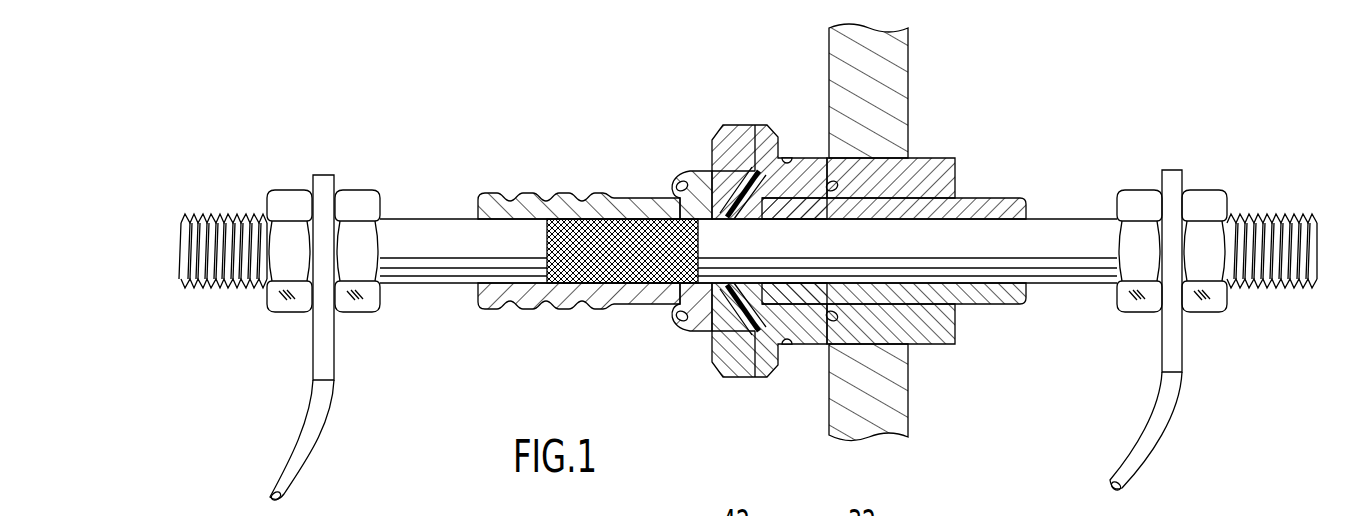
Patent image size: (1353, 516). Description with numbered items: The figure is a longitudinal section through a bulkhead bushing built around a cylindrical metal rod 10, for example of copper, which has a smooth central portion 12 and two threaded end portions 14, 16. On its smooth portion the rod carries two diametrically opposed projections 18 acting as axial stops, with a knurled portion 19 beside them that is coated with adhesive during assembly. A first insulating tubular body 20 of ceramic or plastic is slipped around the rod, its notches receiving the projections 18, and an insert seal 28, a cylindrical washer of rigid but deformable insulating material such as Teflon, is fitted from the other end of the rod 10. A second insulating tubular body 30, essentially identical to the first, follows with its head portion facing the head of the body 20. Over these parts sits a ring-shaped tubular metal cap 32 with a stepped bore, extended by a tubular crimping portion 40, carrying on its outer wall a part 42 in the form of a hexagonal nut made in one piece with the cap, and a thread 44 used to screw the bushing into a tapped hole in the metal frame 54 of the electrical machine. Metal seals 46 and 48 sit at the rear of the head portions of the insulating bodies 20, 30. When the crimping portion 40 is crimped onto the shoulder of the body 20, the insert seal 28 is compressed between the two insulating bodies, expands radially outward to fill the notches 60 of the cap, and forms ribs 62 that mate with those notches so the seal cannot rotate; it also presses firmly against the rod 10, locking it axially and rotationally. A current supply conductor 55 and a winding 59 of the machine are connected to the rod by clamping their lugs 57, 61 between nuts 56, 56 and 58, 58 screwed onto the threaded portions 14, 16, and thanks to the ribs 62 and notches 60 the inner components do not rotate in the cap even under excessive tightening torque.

The cylindrical rod 10 is at (427, 203).
The central portion 12 is at (452, 250).
The threaded end portion 14 is at (225, 262).
The threaded end portion 16 is at (1283, 253).
The projections 18 is at (702, 315).
The knurled portion 19 is at (590, 258).
The first insulating tubular body 20 is at (543, 200).
The insert seal 28 is at (754, 135).
The second insulating tubular body 30 is at (993, 207).
The tubular metal cap 32 is at (708, 144).
The crimping portion 40 is at (672, 312).
The hexagonal nut part 42 is at (735, 125).
The thread 44 is at (935, 162).
The metal seal 46 is at (672, 180).
The seal 48 is at (823, 162).
The metal frame 54 is at (887, 70).
The bracket arm 55 is at (316, 435).
The nuts 56 is at (286, 205).
The lug 57 is at (325, 348).
The nuts 58 is at (1138, 197).
The winding 59 is at (1158, 425).
The notches 60 is at (747, 327).
The lug 61 is at (1170, 338).
The ribs 62 is at (746, 330).